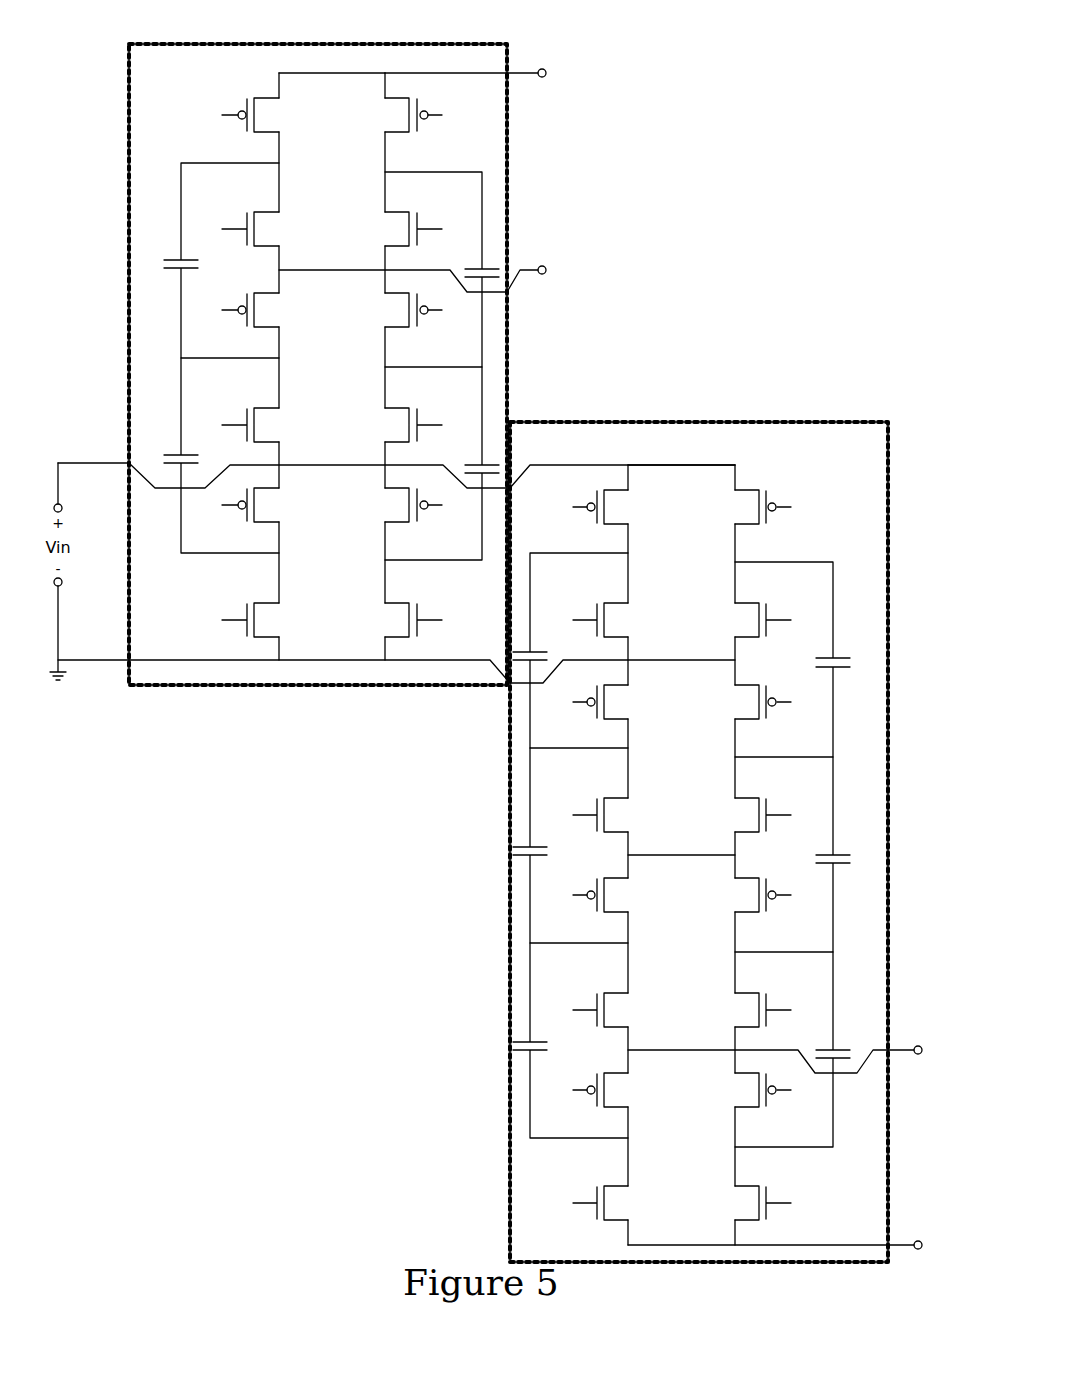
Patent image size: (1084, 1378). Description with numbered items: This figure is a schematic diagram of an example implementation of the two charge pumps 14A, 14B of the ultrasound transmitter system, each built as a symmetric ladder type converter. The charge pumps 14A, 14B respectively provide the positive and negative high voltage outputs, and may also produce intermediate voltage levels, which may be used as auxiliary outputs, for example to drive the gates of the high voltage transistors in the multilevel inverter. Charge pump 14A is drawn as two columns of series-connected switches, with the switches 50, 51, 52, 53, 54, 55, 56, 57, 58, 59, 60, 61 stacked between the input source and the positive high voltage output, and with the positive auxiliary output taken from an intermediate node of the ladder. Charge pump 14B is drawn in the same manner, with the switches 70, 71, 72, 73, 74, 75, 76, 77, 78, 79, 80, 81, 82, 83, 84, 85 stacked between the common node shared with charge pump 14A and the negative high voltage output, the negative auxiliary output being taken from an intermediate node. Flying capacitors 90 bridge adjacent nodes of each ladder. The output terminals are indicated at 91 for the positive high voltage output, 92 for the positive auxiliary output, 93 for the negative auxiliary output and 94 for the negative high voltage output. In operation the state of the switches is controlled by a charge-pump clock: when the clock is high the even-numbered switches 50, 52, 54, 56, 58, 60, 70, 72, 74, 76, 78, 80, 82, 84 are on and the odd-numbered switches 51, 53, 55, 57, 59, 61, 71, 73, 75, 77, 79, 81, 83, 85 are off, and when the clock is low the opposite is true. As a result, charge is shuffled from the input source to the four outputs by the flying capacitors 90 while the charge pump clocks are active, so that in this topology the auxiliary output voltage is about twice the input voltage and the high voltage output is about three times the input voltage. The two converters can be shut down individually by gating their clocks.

The charge pump 14A is at (129, 80).
The charge pump 14B is at (706, 422).
The switch 50 is at (261, 626).
The switch 51 is at (403, 626).
The switch 52 is at (403, 511).
The switch 53 is at (261, 511).
The switch 54 is at (261, 431).
The switch 55 is at (403, 431).
The switch 56 is at (403, 316).
The switch 57 is at (261, 316).
The switch 58 is at (261, 235).
The switch 59 is at (403, 235).
The switch 60 is at (403, 121).
The switch 61 is at (261, 121).
The switch 70 is at (610, 626).
The switch 71 is at (753, 626).
The switch 72 is at (753, 513).
The switch 73 is at (610, 513).
The switch 74 is at (610, 821).
The switch 75 is at (753, 821).
The switch 76 is at (753, 708).
The switch 77 is at (610, 708).
The switch 78 is at (610, 1016).
The switch 79 is at (753, 1016).
The switch 80 is at (753, 901).
The switch 81 is at (610, 901).
The switch 82 is at (610, 1209).
The switch 83 is at (753, 1209).
The switch 84 is at (753, 1096).
The switch 85 is at (610, 1096).
The flying capacitors 90 is at (175, 442).
The V3+ output terminal 91 is at (545, 78).
The V2+ output terminal 92 is at (545, 275).
The V2- output terminal 93 is at (920, 1055).
The V3- output terminal 94 is at (920, 1250).